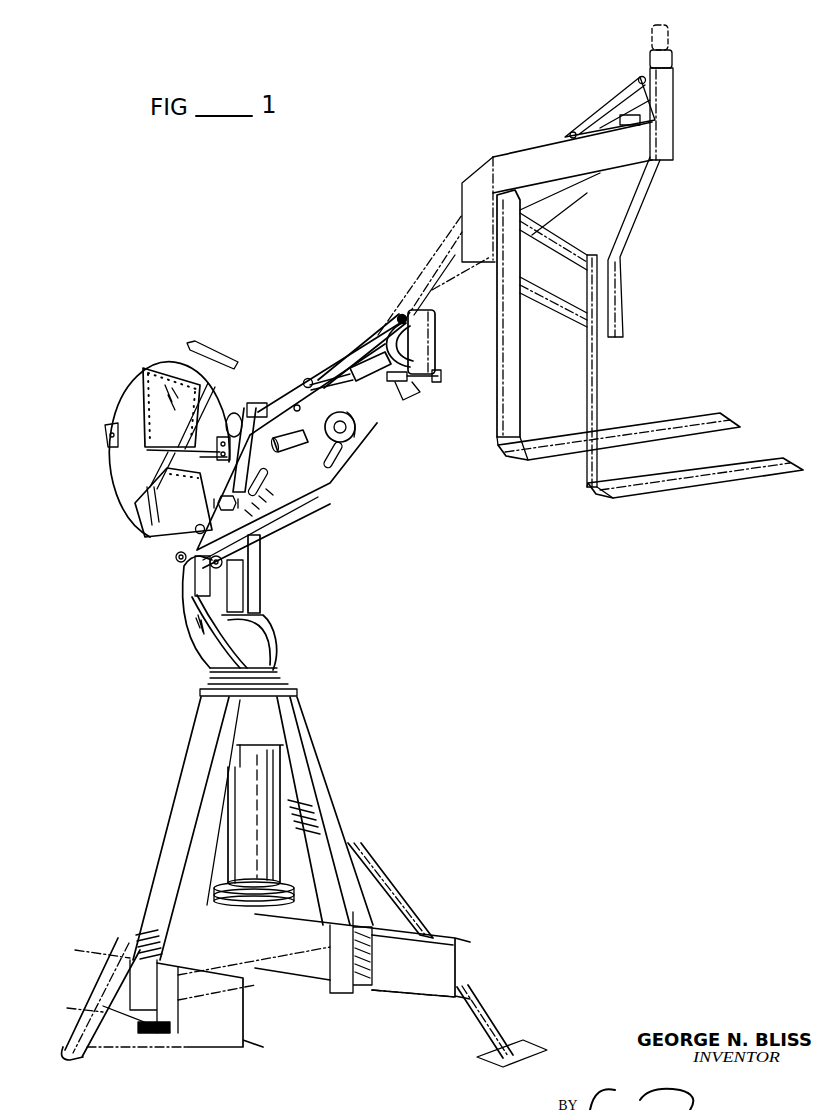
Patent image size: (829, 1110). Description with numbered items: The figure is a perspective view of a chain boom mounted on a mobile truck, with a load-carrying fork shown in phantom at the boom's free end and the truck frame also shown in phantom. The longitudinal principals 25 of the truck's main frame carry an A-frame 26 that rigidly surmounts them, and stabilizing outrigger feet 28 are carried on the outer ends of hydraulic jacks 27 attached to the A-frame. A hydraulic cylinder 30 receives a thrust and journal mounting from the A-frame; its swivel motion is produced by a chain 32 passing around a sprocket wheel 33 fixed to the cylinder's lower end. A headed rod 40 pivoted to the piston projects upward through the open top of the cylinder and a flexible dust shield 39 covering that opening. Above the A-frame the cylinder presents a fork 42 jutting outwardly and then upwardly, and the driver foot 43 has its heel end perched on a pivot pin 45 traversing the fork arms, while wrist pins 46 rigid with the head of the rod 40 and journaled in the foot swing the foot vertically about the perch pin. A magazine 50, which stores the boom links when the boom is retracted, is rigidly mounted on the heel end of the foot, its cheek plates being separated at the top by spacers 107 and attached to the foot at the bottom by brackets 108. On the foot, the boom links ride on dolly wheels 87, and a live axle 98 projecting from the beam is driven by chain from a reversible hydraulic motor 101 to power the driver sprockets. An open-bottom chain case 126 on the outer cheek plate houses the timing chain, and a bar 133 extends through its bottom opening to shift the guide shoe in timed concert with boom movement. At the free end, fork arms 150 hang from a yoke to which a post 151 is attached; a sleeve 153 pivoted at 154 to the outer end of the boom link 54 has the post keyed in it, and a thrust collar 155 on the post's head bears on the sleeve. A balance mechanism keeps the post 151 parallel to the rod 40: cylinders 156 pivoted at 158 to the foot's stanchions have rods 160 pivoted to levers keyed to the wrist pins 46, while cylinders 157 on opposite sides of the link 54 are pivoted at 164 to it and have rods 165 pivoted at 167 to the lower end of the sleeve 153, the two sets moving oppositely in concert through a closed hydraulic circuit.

The longitudinal principals of the truck's main frame 25 is at (240, 1037).
The A-frame 26 is at (320, 789).
The hydraulic jacks 27 is at (125, 928).
The stabilizing outrigger feet 28 is at (522, 1045).
The hydraulic cylinder 30 is at (242, 787).
The chain 32 is at (293, 877).
The sprocket wheel 33 is at (303, 910).
The flexible dust shield 39 is at (268, 643).
The headed rod 40 is at (262, 597).
The fork 42 is at (190, 588).
The driver foot 43 is at (320, 513).
The pivot pin 45 is at (178, 560).
The wrist pins 46 is at (196, 529).
The magazine 50 is at (112, 482).
The boom link 54 is at (606, 92).
The dolly wheels 87 is at (398, 322).
The live axle 98 is at (356, 441).
The reversible hydraulic motor 101 is at (306, 453).
The spacers 107 is at (215, 355).
The brackets 108 is at (160, 548).
The chain case 126 is at (153, 380).
The bar 133 is at (140, 452).
The fork arms 150 is at (787, 457).
The post 151 is at (675, 38).
The sleeve 153 is at (676, 95).
The pivot 154 is at (640, 78).
The thrust collar 155 is at (675, 62).
The double-acting hydraulic cylinders 156 is at (247, 402).
The double-acting hydraulic cylinders 157 is at (622, 125).
The pivot 158 is at (257, 410).
The rods 160 is at (216, 503).
The pivot 164 is at (305, 379).
The rods 165 is at (408, 398).
The pivot 167 is at (443, 376).